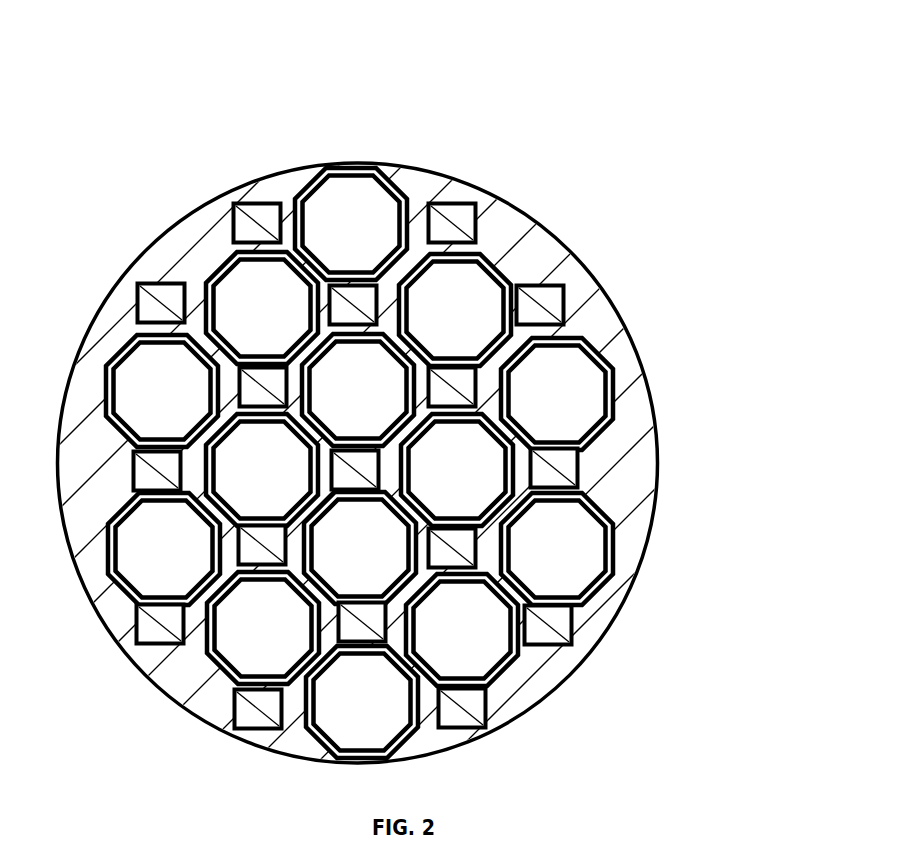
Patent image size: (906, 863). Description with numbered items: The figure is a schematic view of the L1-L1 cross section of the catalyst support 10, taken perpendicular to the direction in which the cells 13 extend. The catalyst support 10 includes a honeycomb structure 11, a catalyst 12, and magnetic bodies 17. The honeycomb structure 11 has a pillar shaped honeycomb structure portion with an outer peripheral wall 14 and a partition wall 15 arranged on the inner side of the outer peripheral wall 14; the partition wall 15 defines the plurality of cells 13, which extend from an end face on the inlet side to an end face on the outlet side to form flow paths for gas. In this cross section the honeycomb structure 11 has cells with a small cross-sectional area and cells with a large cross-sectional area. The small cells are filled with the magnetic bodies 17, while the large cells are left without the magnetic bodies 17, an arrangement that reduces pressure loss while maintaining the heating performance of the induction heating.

The catalyst support 10 is at (453, 431).
The honeycomb structure 11 is at (658, 378).
The catalyst 12 is at (247, 258).
The cells 13 is at (148, 432).
The outer peripheral wall 14 is at (500, 212).
The partition wall 15 is at (575, 608).
The magnetic bodies 17 is at (547, 297).